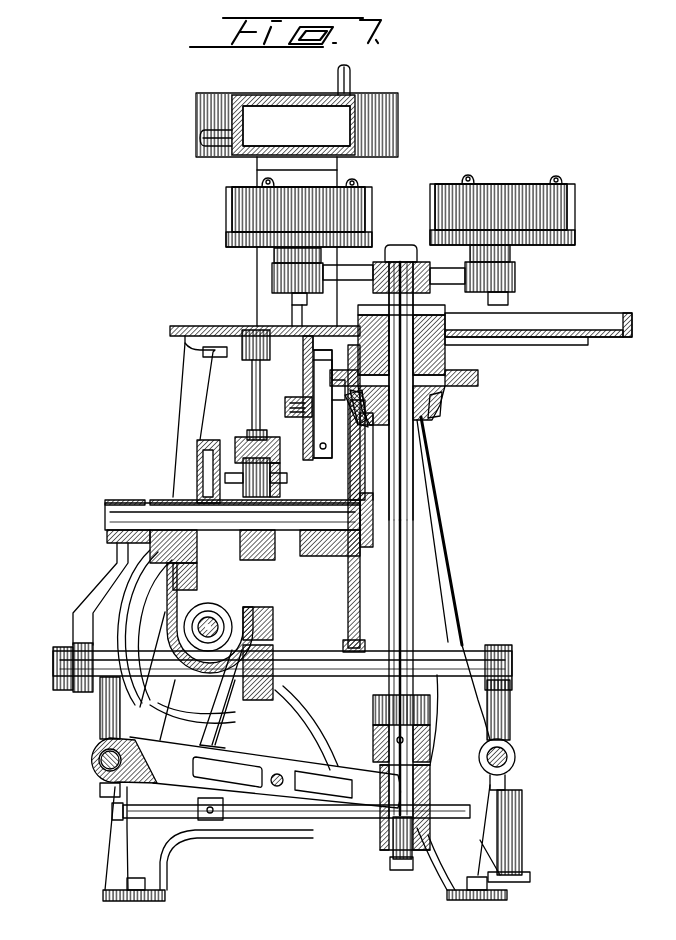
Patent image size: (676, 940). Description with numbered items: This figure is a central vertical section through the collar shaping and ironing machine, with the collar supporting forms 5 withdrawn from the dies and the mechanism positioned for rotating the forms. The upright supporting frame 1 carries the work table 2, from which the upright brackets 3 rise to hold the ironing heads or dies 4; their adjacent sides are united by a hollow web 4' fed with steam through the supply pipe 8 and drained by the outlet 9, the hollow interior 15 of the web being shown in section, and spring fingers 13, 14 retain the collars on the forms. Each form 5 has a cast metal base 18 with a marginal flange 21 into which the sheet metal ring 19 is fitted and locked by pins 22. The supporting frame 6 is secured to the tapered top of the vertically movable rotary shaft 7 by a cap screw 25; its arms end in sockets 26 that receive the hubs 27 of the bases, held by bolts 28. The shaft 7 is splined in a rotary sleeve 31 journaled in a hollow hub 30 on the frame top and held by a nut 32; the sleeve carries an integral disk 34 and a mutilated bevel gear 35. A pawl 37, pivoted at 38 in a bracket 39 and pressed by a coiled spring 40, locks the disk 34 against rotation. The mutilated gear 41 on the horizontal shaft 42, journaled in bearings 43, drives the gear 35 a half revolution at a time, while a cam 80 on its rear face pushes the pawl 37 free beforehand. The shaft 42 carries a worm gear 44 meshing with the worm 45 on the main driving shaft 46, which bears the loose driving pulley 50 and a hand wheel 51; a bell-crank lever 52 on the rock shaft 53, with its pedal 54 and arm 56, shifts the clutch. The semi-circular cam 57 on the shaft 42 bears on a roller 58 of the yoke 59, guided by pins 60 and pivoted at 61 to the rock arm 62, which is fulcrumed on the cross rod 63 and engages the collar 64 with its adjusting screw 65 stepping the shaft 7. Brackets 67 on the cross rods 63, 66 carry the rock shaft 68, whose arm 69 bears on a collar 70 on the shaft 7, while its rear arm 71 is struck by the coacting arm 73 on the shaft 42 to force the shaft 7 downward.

The upright supporting frame 1 is at (184, 386).
The work table 2 is at (627, 337).
The upright brackets 3 is at (256, 300).
The ironing heads or dies 4 is at (313, 125).
The hollow web 4' is at (293, 108).
The collar supporting forms 5 is at (226, 240).
The supporting frame 6 is at (392, 262).
The vertically movable rotary shaft 7 is at (413, 498).
The supply pipe 8 is at (350, 78).
The drainage outlet 9 is at (200, 140).
The spring fingers 13 is at (358, 184).
The spring fingers 14 is at (262, 182).
The drum cavity 15 is at (262, 113).
The cast metal base 18 is at (228, 247).
The circular sheet metal ring 19 is at (232, 204).
The circular marginal flange 21 is at (365, 228).
The pins 22 is at (455, 268).
The cap screw 25 is at (402, 245).
The sockets 26 is at (272, 278).
The hubs 27 is at (290, 247).
The bolts 28 is at (292, 300).
The hollow hub 30 is at (445, 352).
The rotary sleeve 31 is at (442, 396).
The nut 32 is at (440, 305).
The disk 34 is at (478, 378).
The mutilated bevel gear 35 is at (440, 412).
The pawl 37 is at (310, 374).
The pivot 38 is at (323, 449).
The bracket 39 is at (314, 436).
The coiled spring 40 is at (286, 408).
The mutilated gear 41 is at (352, 630).
The horizontal shaft 42 is at (146, 503).
The bearings 43 is at (150, 540).
The worm gear 44 is at (200, 445).
The worm 45 is at (195, 660).
The main driving shaft 46 is at (232, 622).
The driving pulley 50 is at (128, 598).
The hand wheel 51 is at (276, 680).
The bell-crank lever 52 is at (522, 836).
The rock shaft 53 is at (455, 805).
The pedal 54 is at (530, 877).
The upwardly projecting arm 56 is at (212, 720).
The semi-circular cam 57 is at (290, 590).
The roller bearing 58 is at (243, 470).
The vertically movable yoke 59 is at (300, 712).
The guide pins 60 is at (252, 382).
The pivot 61 is at (276, 786).
The rock arm 62 is at (330, 795).
The cross rod 63 is at (88, 762).
The collar 64 is at (430, 820).
The axial adjusting screw 65 is at (390, 866).
The cross rod 66 is at (516, 758).
The brackets 67 is at (100, 718).
The rock shaft 68 is at (470, 652).
The rock arm 69 is at (373, 700).
The collar 70 is at (373, 742).
The rock arm 71 is at (62, 680).
The coacting arm 73 is at (73, 622).
The cam 80 is at (368, 420).